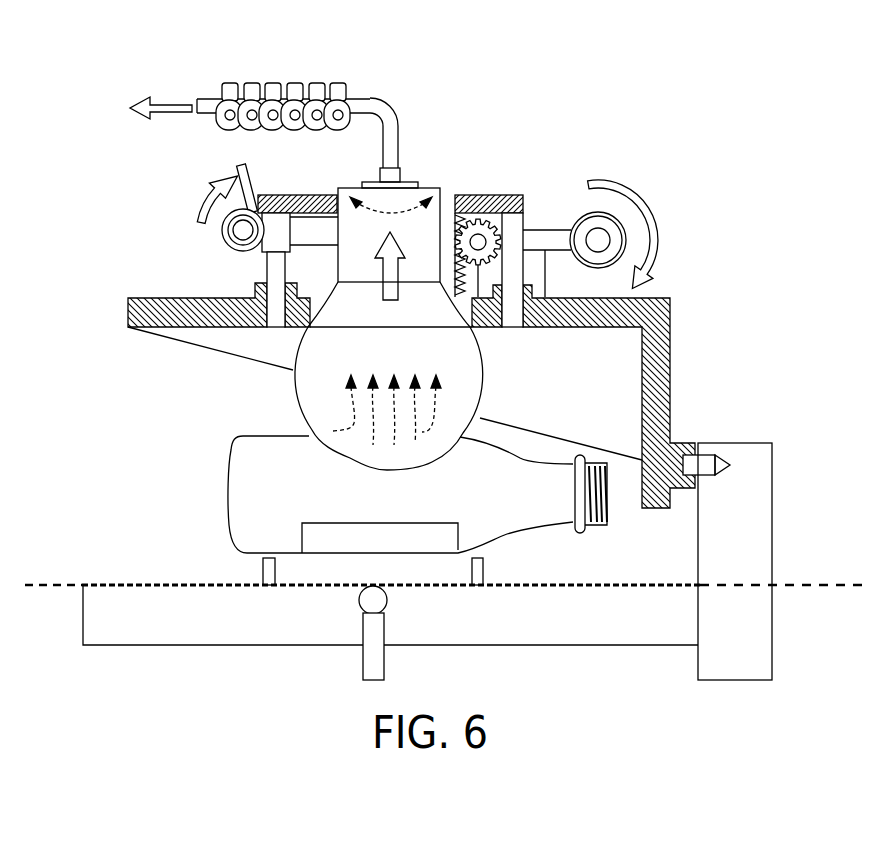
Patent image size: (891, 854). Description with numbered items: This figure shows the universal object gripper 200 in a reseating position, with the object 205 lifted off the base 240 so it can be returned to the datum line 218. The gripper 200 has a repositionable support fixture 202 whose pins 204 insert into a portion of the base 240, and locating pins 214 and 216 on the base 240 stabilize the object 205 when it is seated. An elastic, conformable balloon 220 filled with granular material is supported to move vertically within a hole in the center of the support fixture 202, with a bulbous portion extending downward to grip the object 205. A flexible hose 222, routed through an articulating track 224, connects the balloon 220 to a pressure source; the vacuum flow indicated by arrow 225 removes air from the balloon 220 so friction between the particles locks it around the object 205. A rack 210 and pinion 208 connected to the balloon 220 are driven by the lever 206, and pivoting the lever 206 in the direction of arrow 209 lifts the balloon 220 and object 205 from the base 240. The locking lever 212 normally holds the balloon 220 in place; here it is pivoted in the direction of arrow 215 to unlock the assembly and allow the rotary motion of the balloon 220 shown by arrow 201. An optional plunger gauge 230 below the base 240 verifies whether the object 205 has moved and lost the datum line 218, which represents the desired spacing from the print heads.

The universal object gripper 200 is at (599, 78).
The arrow indicating rotary motion of balloon 201 is at (375, 214).
The repositionable support fixture 202 is at (670, 317).
The pins 204 is at (708, 463).
The object 205 is at (233, 450).
The lever 206 is at (550, 230).
The pinion 208 is at (487, 215).
The arrow indicating clockwise lever direction 209 is at (657, 211).
The rack 210 is at (465, 216).
The locking lever 212 is at (247, 182).
The locating pin 214 is at (263, 575).
The arrow indicating unlocking direction of locking lever 215 is at (195, 197).
The locating pin 216 is at (483, 567).
The datum line 218 is at (814, 583).
The balloon 220 is at (295, 400).
The flexible hose 222 is at (388, 105).
The articulating track 224 is at (287, 83).
The arrow indicating vacuum flow 225 is at (168, 99).
The plunger gauge 230 is at (362, 658).
The base 240 is at (472, 646).